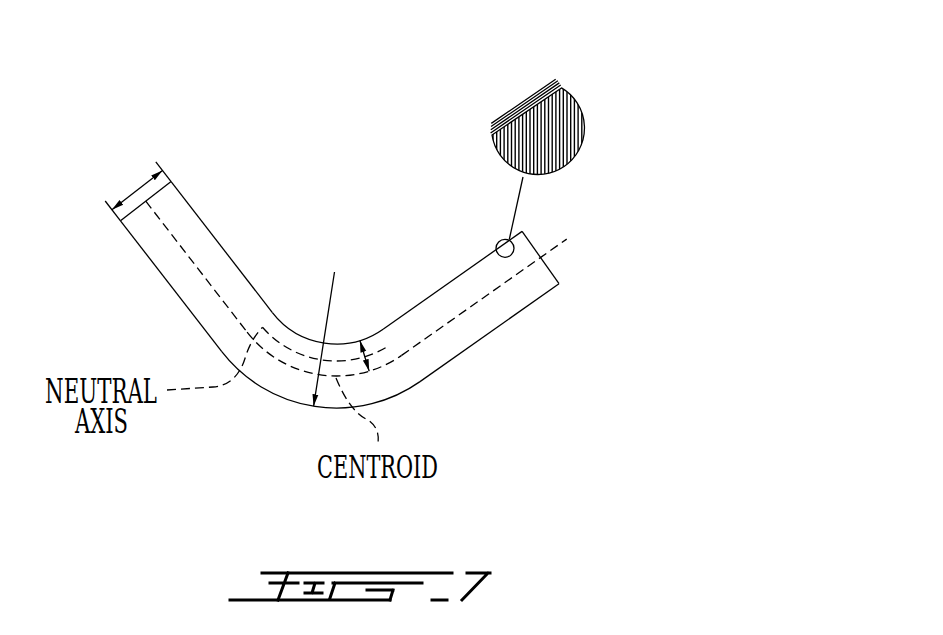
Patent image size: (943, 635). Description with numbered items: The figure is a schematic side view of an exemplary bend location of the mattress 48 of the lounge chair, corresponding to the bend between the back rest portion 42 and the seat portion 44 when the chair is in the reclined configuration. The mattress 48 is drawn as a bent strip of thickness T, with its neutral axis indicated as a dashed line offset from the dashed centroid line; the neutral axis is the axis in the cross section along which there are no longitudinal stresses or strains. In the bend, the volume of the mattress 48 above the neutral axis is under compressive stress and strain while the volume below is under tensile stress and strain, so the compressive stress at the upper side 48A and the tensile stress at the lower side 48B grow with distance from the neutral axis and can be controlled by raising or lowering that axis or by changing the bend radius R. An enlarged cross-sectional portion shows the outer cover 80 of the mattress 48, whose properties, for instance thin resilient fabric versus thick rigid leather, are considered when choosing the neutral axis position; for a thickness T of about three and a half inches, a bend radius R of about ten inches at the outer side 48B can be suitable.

The back rest portion 42 is at (207, 228).
The seat portion 44 is at (477, 263).
The mattress 48 is at (341, 298).
The upper side 48A is at (427, 298).
The lower side 48B is at (433, 373).
The outer cover 80 is at (561, 87).
The thickness T is at (136, 188).
The bend radius R is at (334, 272).